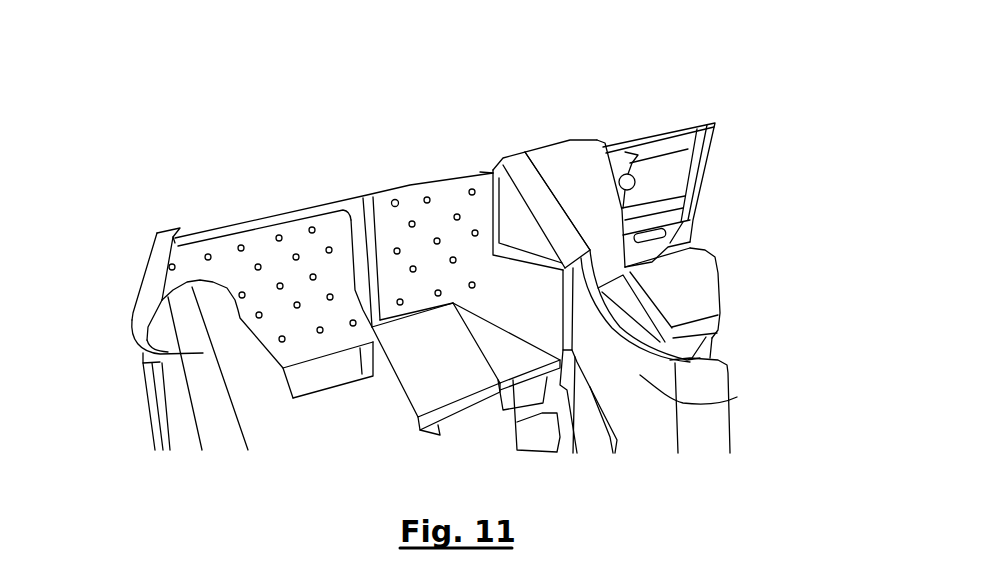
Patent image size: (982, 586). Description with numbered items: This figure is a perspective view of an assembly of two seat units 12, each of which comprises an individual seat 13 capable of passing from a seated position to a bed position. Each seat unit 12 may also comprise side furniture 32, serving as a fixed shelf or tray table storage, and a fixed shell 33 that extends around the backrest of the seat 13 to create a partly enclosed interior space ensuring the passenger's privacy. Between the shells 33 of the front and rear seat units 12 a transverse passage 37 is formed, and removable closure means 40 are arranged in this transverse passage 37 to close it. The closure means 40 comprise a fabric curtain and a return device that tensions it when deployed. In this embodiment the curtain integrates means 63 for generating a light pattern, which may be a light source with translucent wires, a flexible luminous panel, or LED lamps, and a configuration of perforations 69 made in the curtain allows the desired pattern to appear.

The seat unit 12 is at (165, 198).
The seat 13 is at (728, 351).
The side furniture 32 is at (680, 283).
The fixed shell 33 is at (138, 290).
The transverse passage 37 is at (429, 179).
The closure means 40 is at (405, 168).
The means for generating a light pattern 63 is at (440, 207).
The perforations 69 is at (393, 200).